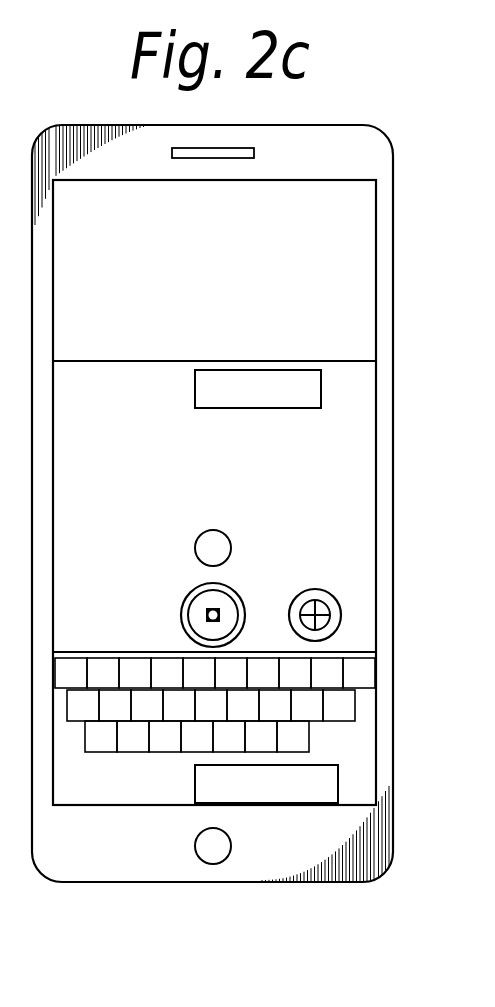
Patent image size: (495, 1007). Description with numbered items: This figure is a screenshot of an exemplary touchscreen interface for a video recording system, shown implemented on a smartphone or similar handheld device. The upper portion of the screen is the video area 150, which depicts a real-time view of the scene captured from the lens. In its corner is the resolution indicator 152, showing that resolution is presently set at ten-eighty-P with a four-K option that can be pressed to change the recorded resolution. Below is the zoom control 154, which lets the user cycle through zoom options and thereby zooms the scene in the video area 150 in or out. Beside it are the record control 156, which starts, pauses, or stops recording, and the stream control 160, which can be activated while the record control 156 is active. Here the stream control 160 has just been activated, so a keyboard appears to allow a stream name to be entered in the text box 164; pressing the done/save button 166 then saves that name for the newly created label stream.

The video area 150 is at (310, 298).
The resolution indicator 152 is at (80, 192).
The zoom control 154 is at (198, 541).
The record control 156 is at (185, 607).
The stream control 160 is at (328, 596).
The text box 164 is at (352, 391).
The done/save button 166 is at (352, 785).